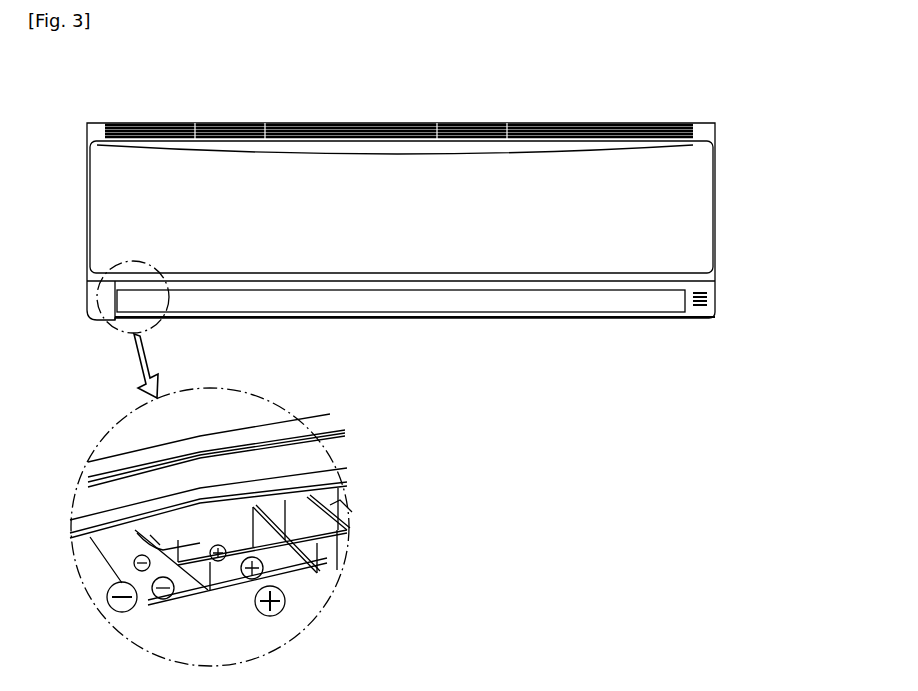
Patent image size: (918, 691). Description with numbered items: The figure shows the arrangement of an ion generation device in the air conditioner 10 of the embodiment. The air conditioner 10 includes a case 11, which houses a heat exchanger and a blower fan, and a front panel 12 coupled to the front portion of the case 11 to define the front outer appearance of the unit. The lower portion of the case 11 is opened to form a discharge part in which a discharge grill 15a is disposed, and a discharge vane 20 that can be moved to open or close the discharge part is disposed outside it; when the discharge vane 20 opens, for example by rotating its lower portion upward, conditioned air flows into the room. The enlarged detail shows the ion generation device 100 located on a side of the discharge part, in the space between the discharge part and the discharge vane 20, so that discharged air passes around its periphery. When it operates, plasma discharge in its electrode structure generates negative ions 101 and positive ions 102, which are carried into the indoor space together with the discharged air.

The air conditioner 10 is at (417, 290).
The case 11 is at (715, 283).
The front panel 12 is at (690, 225).
The discharge vane 20 is at (522, 312).
The discharge grill 15a is at (330, 503).
The ion generation device 100 is at (134, 537).
The negative ions 101 is at (122, 608).
The positive ions 102 is at (278, 607).